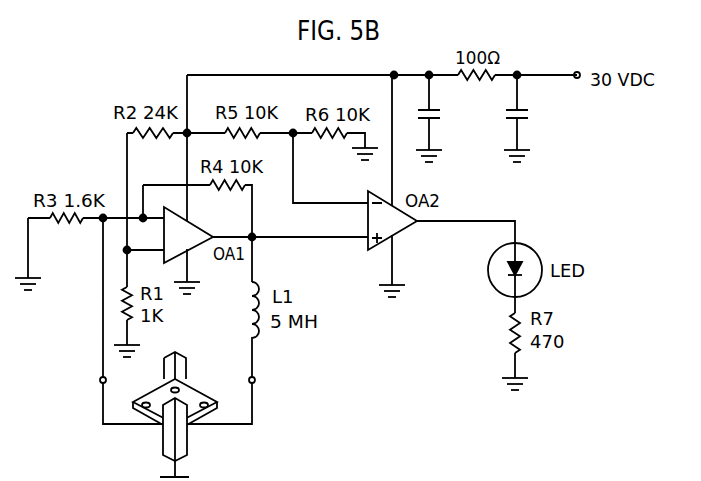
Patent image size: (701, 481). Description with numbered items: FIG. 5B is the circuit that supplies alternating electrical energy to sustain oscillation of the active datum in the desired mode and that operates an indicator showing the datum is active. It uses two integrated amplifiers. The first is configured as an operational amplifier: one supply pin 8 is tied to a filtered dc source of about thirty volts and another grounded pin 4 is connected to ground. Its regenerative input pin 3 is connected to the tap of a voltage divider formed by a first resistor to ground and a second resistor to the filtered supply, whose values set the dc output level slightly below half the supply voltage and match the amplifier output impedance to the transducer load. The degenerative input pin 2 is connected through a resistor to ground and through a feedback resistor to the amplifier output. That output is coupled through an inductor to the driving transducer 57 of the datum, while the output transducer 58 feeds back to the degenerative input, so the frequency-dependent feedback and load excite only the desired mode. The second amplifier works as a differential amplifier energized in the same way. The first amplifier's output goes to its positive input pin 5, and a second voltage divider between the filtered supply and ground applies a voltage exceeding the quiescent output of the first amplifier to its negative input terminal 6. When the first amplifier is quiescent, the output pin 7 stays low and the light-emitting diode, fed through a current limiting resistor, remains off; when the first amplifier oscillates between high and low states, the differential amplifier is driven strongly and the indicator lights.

The degenerative input pin 2 is at (133, 207).
The regenerative input pin 3 is at (145, 239).
The grounded pin 4 is at (188, 271).
The dc supply pin 8 is at (195, 149).
The positive input pin 5 is at (290, 228).
The negative input terminal 6 is at (330, 168).
The output pin 7 is at (466, 233).
The driving transducer 57 is at (187, 430).
The output transducer 58 is at (163, 437).